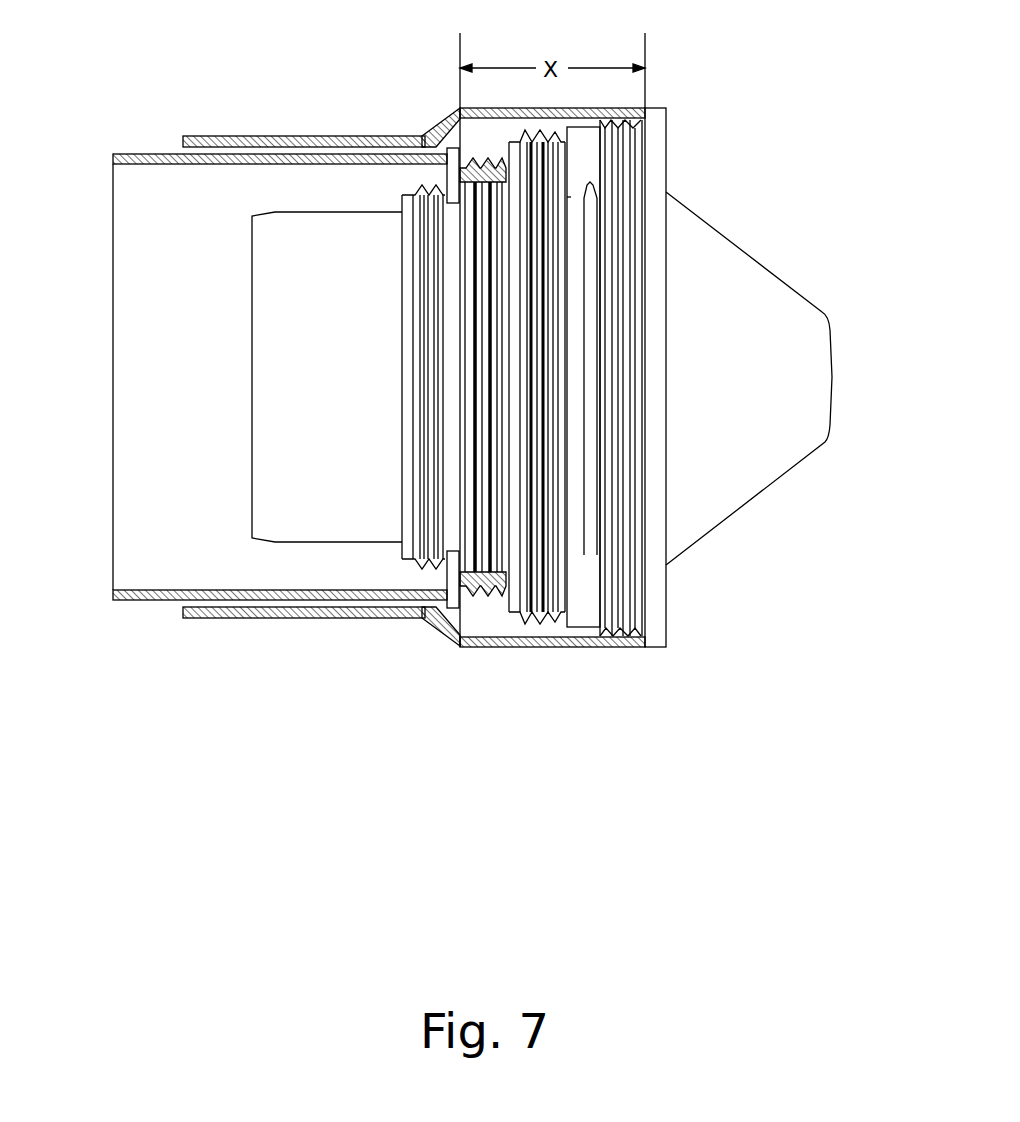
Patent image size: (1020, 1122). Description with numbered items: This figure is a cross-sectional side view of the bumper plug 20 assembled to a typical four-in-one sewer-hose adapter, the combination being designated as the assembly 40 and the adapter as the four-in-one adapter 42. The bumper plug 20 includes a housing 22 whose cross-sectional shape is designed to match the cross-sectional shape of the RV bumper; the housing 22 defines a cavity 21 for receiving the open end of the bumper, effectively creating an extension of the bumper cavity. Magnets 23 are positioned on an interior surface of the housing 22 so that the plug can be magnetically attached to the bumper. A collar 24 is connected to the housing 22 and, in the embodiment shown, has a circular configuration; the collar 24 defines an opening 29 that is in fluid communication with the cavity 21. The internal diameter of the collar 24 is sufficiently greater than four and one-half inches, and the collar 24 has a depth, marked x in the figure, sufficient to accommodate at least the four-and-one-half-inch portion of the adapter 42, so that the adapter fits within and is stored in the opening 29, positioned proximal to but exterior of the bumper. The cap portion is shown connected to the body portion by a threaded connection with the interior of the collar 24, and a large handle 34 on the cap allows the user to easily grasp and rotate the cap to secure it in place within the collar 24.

The bumper plug 20 is at (390, 64).
The cavity 21 is at (150, 205).
The housing 22 is at (304, 338).
The magnets 23 is at (420, 134).
The collar 24 is at (590, 647).
The opening 29 is at (490, 620).
The handle 34 is at (802, 343).
The assembly 40 is at (755, 117).
The 4-in-1 adapter 42 is at (333, 520).